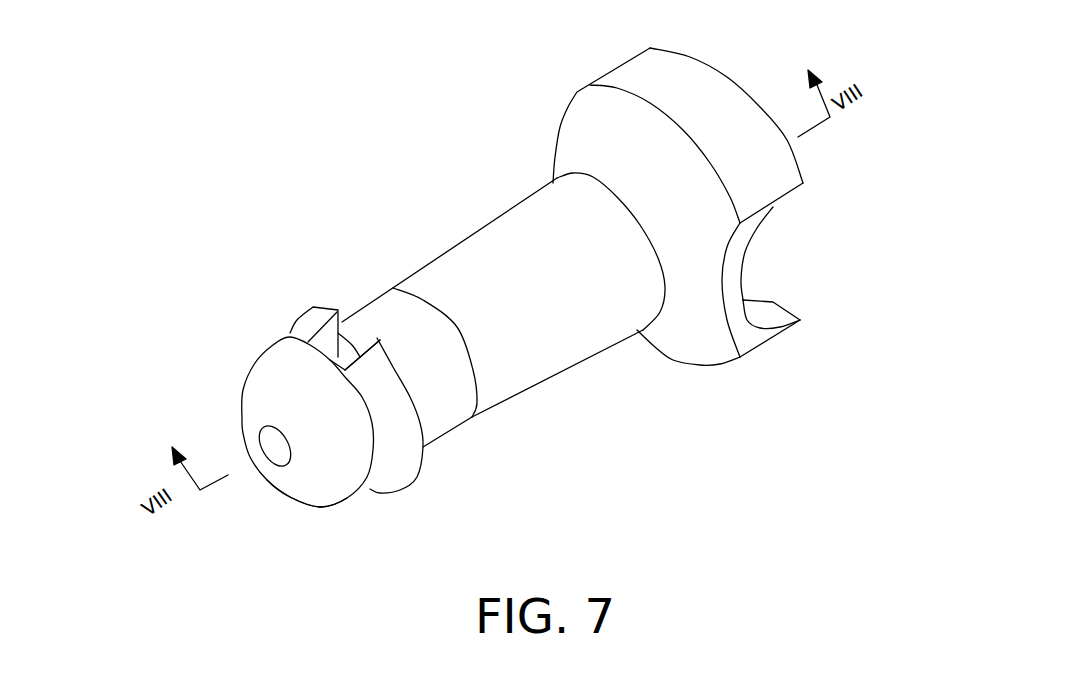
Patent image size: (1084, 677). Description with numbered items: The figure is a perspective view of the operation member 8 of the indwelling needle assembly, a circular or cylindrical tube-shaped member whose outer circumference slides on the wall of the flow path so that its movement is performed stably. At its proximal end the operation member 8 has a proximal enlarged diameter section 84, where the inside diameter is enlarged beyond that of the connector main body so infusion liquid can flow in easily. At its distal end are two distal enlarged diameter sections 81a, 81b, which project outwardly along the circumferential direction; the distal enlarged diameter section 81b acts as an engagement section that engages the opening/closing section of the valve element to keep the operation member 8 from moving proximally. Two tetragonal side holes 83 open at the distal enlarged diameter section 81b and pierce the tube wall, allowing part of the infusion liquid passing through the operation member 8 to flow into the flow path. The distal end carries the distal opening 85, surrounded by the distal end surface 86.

The operation member 8 is at (366, 150).
The distal enlarged diameter section 81a is at (338, 473).
The distal enlarged diameter section 81b is at (397, 465).
The side holes 83 is at (343, 363).
The proximal enlarged diameter section 84 is at (705, 343).
The distal opening 85 is at (272, 447).
The distal end surface 86 is at (295, 477).